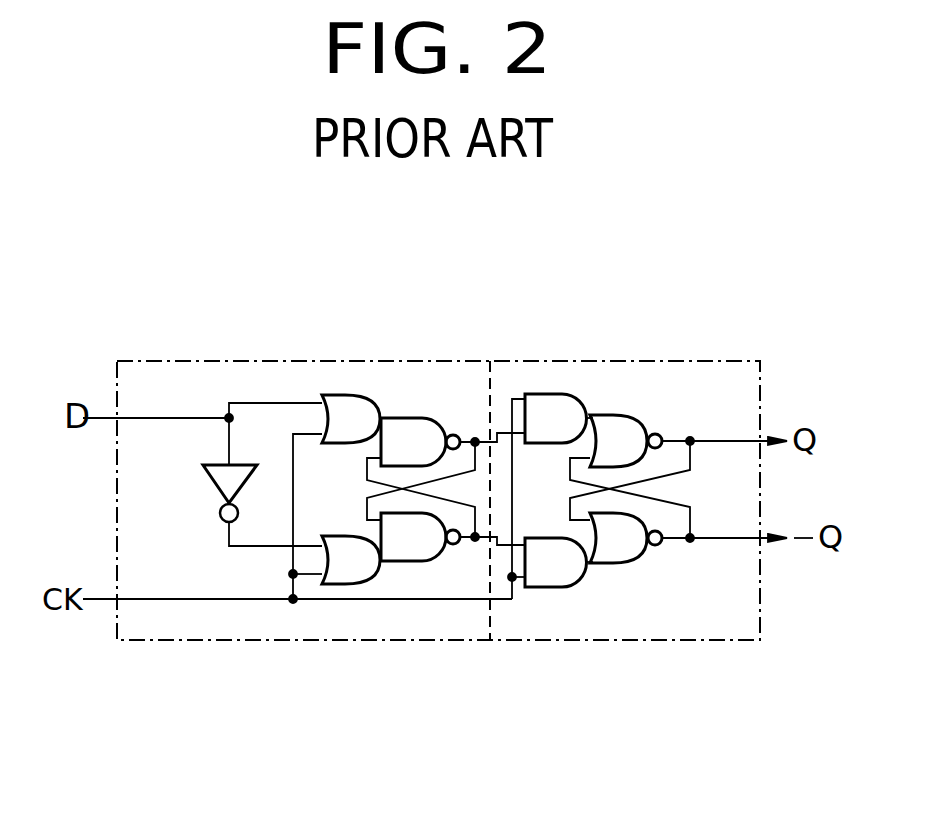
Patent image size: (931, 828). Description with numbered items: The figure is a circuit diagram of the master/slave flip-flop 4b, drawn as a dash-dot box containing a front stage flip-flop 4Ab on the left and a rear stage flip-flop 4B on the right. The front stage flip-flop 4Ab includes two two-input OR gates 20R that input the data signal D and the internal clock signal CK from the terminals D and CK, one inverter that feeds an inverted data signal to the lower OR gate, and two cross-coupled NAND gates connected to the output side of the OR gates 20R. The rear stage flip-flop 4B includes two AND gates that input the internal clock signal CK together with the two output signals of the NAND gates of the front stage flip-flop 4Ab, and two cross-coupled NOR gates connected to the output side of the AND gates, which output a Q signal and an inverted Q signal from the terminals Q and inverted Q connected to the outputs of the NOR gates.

The front stage flip-flop 4Ab is at (235, 368).
The 2-inputs OR gate 20R is at (343, 395).
The master/slave flip-flop 4b is at (553, 350).
The rear stage flip-flop 4B is at (595, 632).